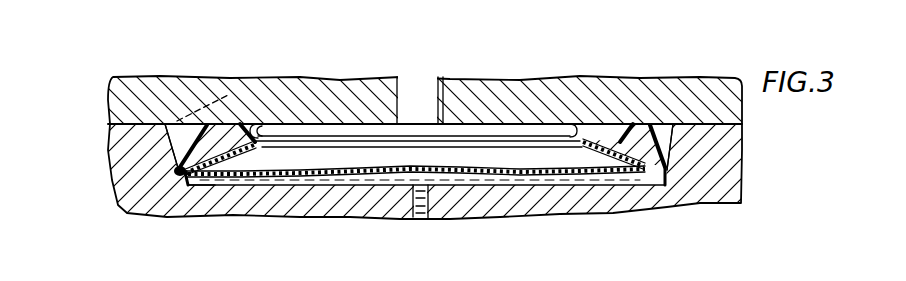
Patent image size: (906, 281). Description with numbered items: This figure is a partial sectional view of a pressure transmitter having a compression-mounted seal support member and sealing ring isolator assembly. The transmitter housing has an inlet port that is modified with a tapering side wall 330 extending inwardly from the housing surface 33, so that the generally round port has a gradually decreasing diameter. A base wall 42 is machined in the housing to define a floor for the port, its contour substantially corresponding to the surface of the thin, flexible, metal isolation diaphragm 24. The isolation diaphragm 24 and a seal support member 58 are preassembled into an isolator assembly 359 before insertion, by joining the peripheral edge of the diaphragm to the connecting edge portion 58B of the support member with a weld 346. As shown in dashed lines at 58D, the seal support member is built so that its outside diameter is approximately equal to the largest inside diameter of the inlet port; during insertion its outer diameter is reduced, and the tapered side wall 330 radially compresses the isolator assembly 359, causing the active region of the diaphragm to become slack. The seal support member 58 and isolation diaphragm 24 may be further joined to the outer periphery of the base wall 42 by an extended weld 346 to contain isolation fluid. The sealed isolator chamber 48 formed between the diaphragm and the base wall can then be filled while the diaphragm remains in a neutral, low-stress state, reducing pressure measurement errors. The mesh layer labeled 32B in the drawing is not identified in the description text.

The isolation diaphragm 24 is at (565, 185).
The housing surface 33 is at (690, 124).
The base wall 42 is at (388, 187).
The isolator chamber 48 is at (517, 180).
The screen mesh 32B is at (444, 156).
The seal support member 58 is at (249, 152).
The seal support member outside diameter 58D is at (231, 96).
The connecting edge portion 58B is at (174, 171).
The weld 346 is at (178, 171).
The isolator assembly 359 is at (199, 194).
The tapering side wall 330 is at (672, 154).